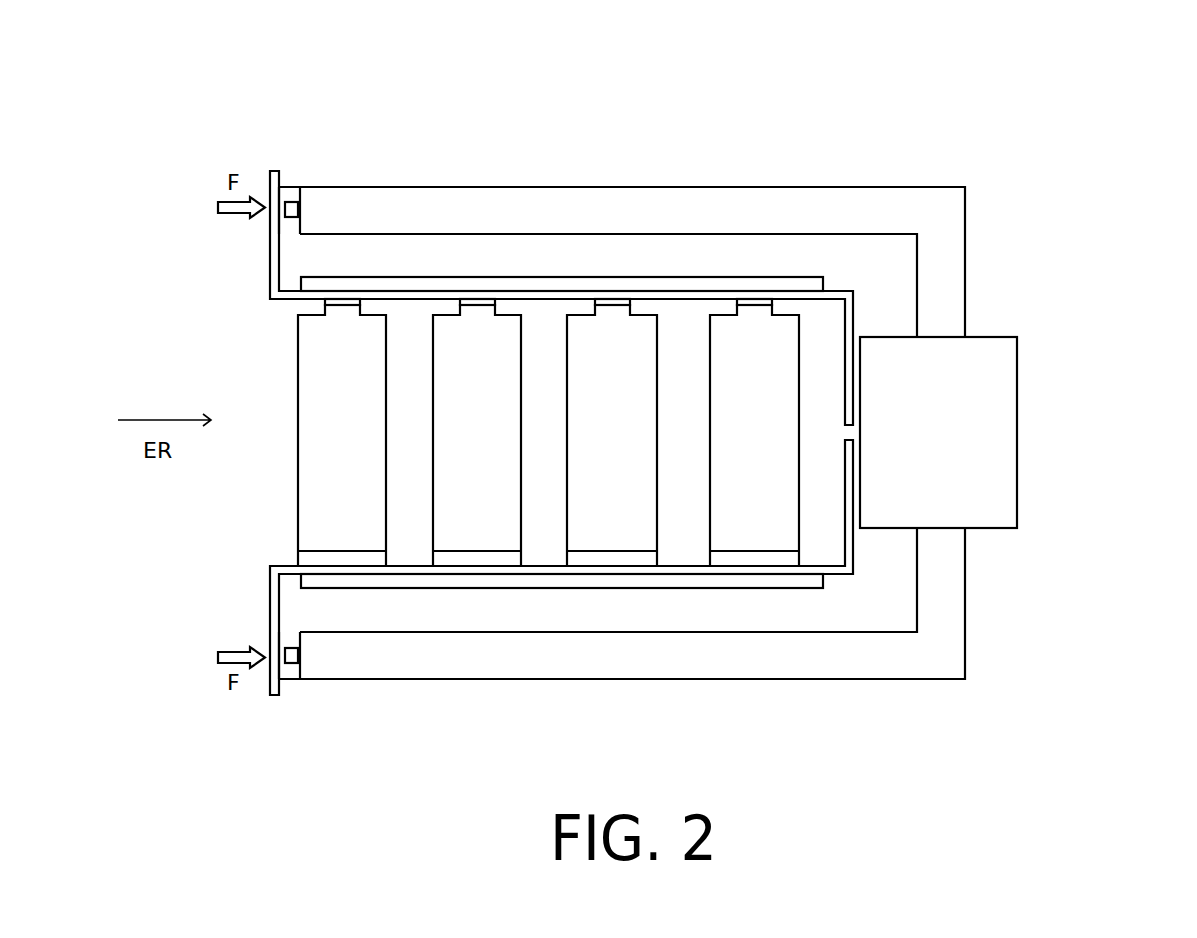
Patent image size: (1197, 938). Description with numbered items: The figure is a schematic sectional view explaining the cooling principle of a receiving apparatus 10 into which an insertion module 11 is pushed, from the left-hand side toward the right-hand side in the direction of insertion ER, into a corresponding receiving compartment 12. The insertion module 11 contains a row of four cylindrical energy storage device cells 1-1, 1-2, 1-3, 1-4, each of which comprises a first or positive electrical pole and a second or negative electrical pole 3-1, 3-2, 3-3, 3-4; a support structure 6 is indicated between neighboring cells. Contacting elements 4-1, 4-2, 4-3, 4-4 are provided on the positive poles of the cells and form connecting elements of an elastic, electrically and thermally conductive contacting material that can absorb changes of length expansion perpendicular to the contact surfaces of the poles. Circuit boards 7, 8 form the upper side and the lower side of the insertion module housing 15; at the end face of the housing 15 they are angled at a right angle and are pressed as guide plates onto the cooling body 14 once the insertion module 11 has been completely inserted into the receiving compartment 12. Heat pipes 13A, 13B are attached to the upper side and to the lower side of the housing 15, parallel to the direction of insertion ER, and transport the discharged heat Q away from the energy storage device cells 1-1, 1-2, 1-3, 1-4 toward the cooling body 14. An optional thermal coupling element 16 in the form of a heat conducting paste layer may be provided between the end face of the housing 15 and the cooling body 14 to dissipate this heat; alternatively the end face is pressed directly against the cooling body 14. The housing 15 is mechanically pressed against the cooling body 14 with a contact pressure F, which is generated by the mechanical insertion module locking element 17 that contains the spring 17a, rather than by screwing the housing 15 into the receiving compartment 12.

The receiving apparatus 10 is at (1083, 104).
The insertion module 11 is at (285, 522).
The receiving compartment 12 is at (947, 215).
The cooling body 14 is at (938, 432).
The insertion module housing 15 is at (582, 593).
The thermal coupling element 16 is at (857, 520).
The mechanical insertion module locking element 17 is at (291, 190).
The spring 17a is at (297, 208).
The circuit board 7 is at (841, 293).
The circuit board 8 is at (853, 569).
The support structure 6 is at (549, 410).
The heat pipe 13A is at (705, 283).
The heat pipe 13B is at (728, 582).
The energy storage device cell 1-1 is at (342, 435).
The energy storage device cell 1-2 is at (477, 435).
The energy storage device cell 1-3 is at (612, 435).
The energy storage device cell 1-4 is at (754, 435).
The second pole 3-1 is at (375, 560).
The second pole 3-2 is at (510, 560).
The second pole 3-3 is at (652, 560).
The second pole 3-4 is at (787, 560).
The contacting element 4-1 is at (337, 302).
The contacting element 4-2 is at (473, 302).
The contacting element 4-3 is at (612, 302).
The contacting element 4-4 is at (753, 302).